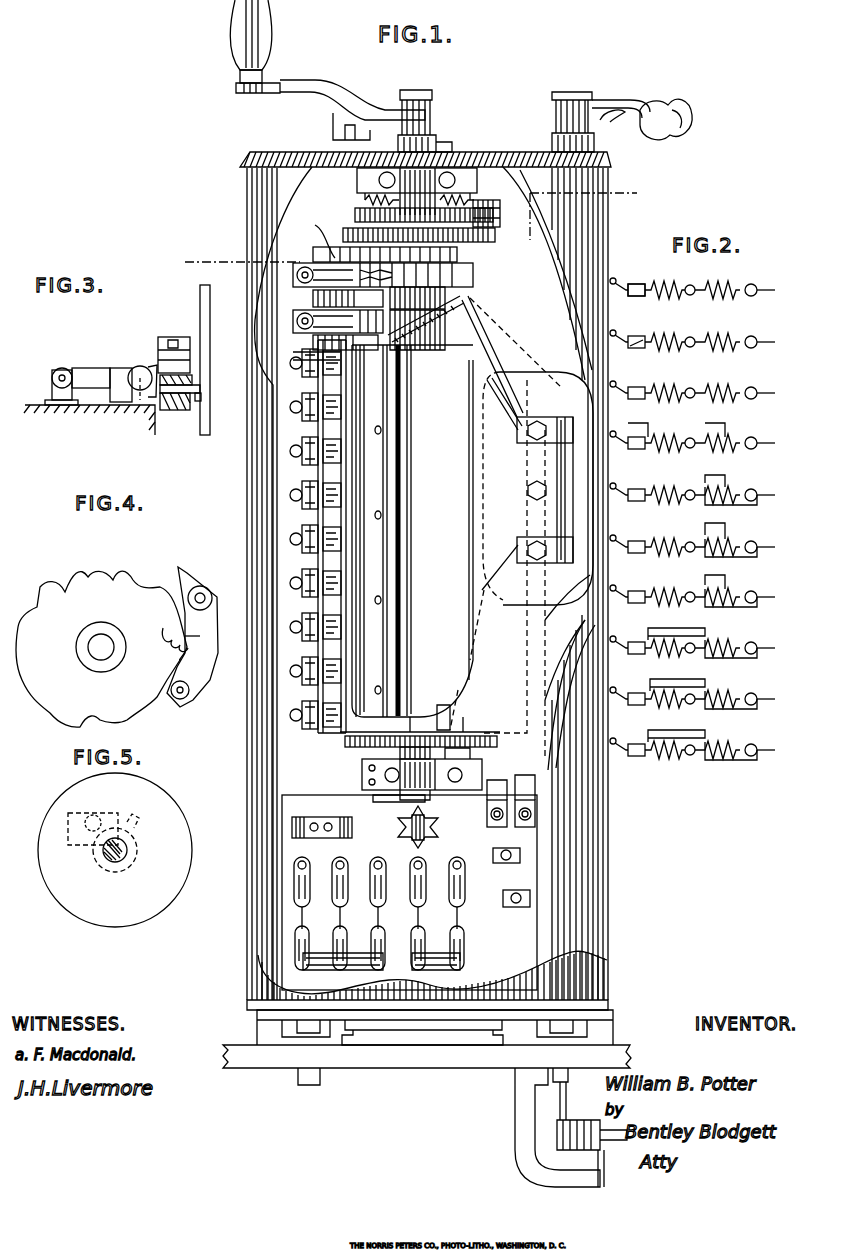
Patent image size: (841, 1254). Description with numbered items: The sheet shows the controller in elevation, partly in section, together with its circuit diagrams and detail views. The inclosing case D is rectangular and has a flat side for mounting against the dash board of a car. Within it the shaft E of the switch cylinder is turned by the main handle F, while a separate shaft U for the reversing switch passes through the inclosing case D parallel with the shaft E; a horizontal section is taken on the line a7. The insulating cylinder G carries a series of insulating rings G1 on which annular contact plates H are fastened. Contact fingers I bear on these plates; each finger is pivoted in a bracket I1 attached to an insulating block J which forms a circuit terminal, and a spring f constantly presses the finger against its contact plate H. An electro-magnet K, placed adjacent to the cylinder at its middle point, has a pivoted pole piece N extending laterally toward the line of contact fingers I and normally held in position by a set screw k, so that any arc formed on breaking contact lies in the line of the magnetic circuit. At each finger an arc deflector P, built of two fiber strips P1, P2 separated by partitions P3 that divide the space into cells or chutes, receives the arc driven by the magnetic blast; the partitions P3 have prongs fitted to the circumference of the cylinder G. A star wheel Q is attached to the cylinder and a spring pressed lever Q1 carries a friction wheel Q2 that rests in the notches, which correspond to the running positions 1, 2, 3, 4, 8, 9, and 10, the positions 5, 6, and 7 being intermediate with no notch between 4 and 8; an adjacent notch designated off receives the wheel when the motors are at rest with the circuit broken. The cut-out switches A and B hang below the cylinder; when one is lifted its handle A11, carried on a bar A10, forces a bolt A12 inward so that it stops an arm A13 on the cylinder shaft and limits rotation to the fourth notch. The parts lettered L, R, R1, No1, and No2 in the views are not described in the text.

In FIG. 1, the main handle F is at (235, 33).
In FIG. 1, the cylinder shaft E is at (443, 70).
In FIG. 5, the cylinder shaft E is at (115, 862).
In FIG. 1, the reversing switch shaft U is at (580, 92).
In FIG. 1, the inclosing case D is at (262, 222).
In FIG. 1, the section line a7 is at (411, 225).
In FIG. 1, the star wheel Q is at (362, 218).
In FIG. 4, the star wheel Q is at (101, 649).
In FIG. 1, the spring pressed lever Q1 is at (490, 200).
In FIG. 4, the spring pressed lever Q1 is at (210, 630).
In FIG. 1, the friction wheel Q2 is at (488, 225).
In FIG. 4, the friction wheel Q2 is at (182, 700).
In FIG. 1, the spring f is at (320, 232).
In FIG. 1, the arc deflector P is at (348, 256).
In FIG. 1, the gear L is at (385, 253).
In FIG. 1, the contact plate H is at (473, 277).
In FIG. 1, the insulating block J is at (313, 299).
In FIG. 1, the insulating ring G1 is at (400, 298).
In FIG. 1, the insulating cylinder G is at (425, 312).
In FIG. 1, the bracket I1 is at (345, 341).
In FIG. 1, the contact finger I is at (334, 357).
In FIG. 1, the electro-magnet K is at (537, 375).
In FIG. 1, the set screw k is at (528, 490).
In FIG. 1, the pivoted pole piece N is at (412, 531).
In FIG. 1, the fiber strip P1 is at (320, 386).
In FIG. 1, the fiber strip P2 is at (345, 436).
In FIG. 1, the partition P3 is at (333, 468).
In FIG. 1, the arm A13 is at (470, 750).
In FIG. 3, the arm A13 is at (200, 395).
In FIG. 5, the arm A13 is at (138, 822).
In FIG. 1, the bolt A12 is at (390, 800).
In FIG. 3, the bolt A12 is at (176, 402).
In FIG. 5, the bolt A12 is at (93, 820).
In FIG. 1, the cut-out switch A is at (307, 913).
In FIG. 1, the switch bar A10 is at (345, 908).
In FIG. 3, the switch bar A10 is at (82, 380).
In FIG. 1, the cut-out switch B is at (437, 913).
In FIG. 1, the switch handle A11 is at (372, 968).
In FIG. 3, the switch handle A11 is at (140, 366).
In FIG. 2, the resistance contact R is at (628, 476).
In FIG. 2, the resistance contact R1 is at (640, 466).
In FIG. 2, the resistance coil No.1 No1 is at (656, 268).
In FIG. 2, the resistance coil No.2 No2 is at (721, 268).
In FIG. 2, the running position 1 is at (784, 291).
In FIG. 4, the running position 1 is at (141, 575).
In FIG. 2, the running position 2 is at (784, 343).
In FIG. 4, the running position 2 is at (101, 567).
In FIG. 2, the running position 3 is at (784, 394).
In FIG. 4, the running position 3 is at (62, 575).
In FIG. 2, the running position 4 is at (784, 444).
In FIG. 4, the running position 4 is at (32, 607).
In FIG. 2, the intermediate position 5 is at (784, 496).
In FIG. 2, the intermediate position 6 is at (784, 548).
In FIG. 2, the intermediate position 7 is at (784, 598).
In FIG. 2, the running position 8 is at (784, 649).
In FIG. 4, the running position 8 is at (101, 723).
In FIG. 2, the running position 9 is at (784, 700).
In FIG. 4, the running position 9 is at (141, 713).
In FIG. 2, the running position 10 is at (786, 751).
In FIG. 4, the running position 10 is at (148, 678).
In FIG. 4, the off notch off is at (178, 652).